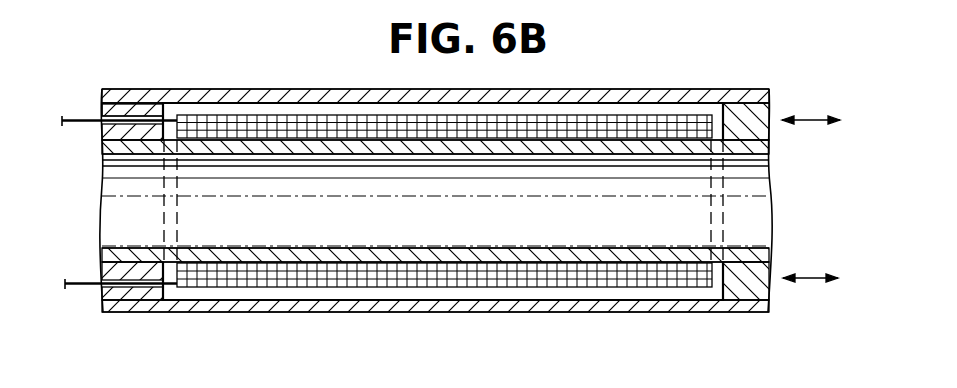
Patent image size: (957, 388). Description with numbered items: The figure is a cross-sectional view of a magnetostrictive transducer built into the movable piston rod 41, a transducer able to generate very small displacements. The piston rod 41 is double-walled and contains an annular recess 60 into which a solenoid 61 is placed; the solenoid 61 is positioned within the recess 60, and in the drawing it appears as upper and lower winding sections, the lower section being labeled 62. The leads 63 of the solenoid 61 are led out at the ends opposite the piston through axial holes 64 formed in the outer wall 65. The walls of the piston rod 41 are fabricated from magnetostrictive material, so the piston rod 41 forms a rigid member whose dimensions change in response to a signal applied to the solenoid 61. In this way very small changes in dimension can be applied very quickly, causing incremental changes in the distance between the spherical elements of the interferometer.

The piston rod 41 is at (97, 202).
The annular recess 60 is at (655, 108).
The solenoid 61 is at (249, 117).
The lower piezoelectric mesh element 62 is at (345, 278).
The leads 63 is at (78, 117).
The axial holes 64 is at (142, 117).
The outer wall 65 is at (125, 110).